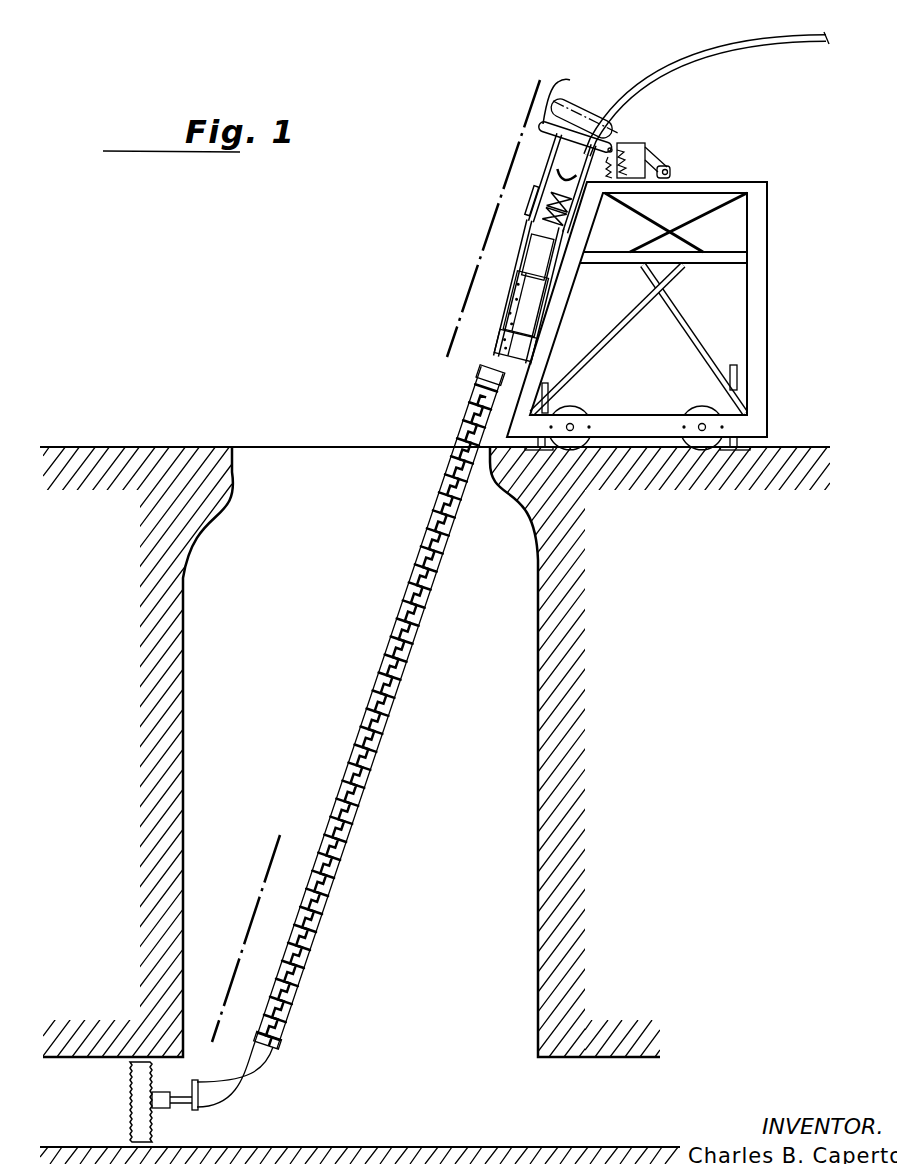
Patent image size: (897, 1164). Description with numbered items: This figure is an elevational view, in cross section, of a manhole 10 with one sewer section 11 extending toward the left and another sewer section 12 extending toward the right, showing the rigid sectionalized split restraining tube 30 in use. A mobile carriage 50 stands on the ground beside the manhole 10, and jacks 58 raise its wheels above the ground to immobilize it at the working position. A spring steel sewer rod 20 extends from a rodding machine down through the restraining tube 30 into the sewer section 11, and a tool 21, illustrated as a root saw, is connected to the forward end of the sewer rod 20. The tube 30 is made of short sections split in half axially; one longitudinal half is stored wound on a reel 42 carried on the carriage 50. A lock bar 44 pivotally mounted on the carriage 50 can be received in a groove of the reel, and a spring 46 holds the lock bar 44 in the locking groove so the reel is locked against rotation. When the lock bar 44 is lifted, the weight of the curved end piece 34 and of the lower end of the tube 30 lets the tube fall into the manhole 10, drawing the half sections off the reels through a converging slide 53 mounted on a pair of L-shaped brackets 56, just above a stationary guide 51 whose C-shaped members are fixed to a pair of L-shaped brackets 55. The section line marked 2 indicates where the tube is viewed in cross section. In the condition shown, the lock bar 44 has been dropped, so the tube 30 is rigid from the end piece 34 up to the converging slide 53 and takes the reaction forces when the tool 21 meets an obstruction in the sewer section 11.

The section line 2- 2 is at (542, 101).
The manhole 10 is at (545, 700).
The sewer section 11 is at (81, 1064).
The sewer section 12 is at (592, 1045).
The sewer rod 20 is at (713, 56).
The tool 21 is at (140, 1101).
The rigid sectionalized split restraining tube 30 is at (398, 602).
The curved end piece 34 is at (241, 1084).
The reel 42 is at (530, 207).
The lock bar 44 is at (573, 102).
The spring 46 is at (620, 172).
The carriage 50 is at (755, 343).
The stationary guide 51 is at (500, 348).
The converging slide 53 is at (533, 260).
The L-shaped brackets 55 is at (520, 354).
The L-shaped brackets 56 is at (533, 316).
The jacks 58 is at (747, 448).